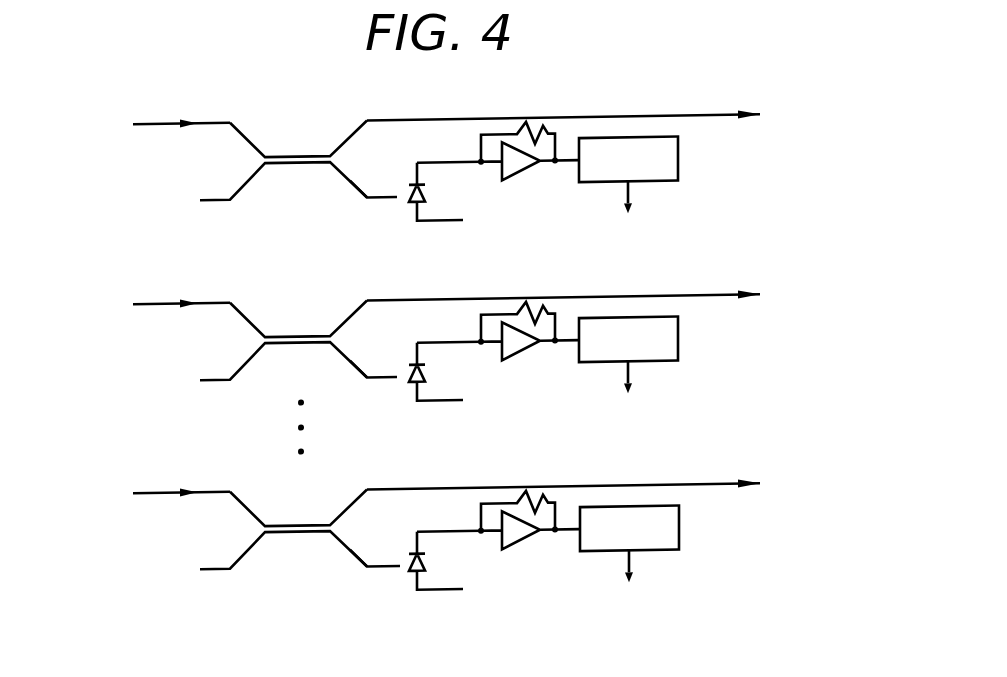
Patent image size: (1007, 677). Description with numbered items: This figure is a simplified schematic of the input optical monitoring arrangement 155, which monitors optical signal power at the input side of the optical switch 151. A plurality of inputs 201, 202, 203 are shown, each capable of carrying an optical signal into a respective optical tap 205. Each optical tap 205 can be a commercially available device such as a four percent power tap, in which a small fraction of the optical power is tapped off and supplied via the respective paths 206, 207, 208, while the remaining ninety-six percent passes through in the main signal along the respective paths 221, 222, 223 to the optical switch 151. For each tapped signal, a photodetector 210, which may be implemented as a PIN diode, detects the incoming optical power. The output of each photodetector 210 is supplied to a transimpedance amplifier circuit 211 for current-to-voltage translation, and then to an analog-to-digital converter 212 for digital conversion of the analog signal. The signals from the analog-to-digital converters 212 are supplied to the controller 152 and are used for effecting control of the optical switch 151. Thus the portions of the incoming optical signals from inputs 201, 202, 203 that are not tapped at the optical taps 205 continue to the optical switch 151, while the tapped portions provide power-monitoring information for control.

The input optical monitoring arrangement 155 is at (462, 81).
The input 201 is at (153, 120).
The input 202 is at (181, 286).
The input 203 is at (181, 475).
The optical tap 205 is at (302, 150).
The path 206 is at (358, 179).
The path 207 is at (373, 348).
The path 208 is at (375, 537).
The photodetector 210 is at (427, 192).
The transimpedance amplifier circuit 211 is at (522, 179).
The analog-to-digital converter 212 is at (678, 164).
The path 221 is at (712, 118).
The path 222 is at (569, 278).
The path 223 is at (569, 467).
The controller 152 is at (645, 277).
The optical switch 151 is at (842, 332).